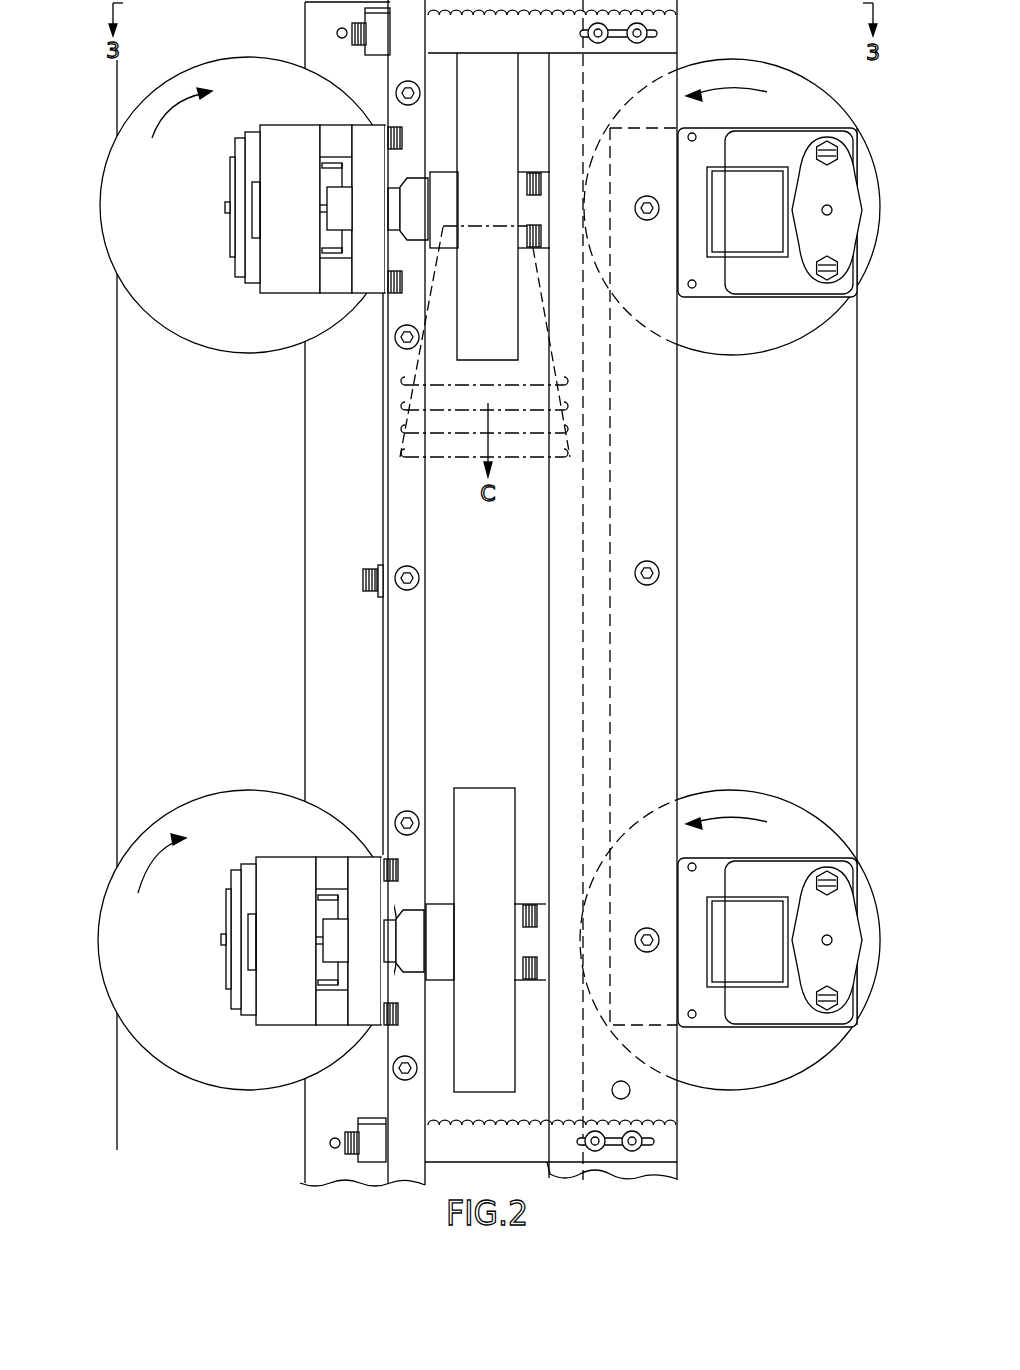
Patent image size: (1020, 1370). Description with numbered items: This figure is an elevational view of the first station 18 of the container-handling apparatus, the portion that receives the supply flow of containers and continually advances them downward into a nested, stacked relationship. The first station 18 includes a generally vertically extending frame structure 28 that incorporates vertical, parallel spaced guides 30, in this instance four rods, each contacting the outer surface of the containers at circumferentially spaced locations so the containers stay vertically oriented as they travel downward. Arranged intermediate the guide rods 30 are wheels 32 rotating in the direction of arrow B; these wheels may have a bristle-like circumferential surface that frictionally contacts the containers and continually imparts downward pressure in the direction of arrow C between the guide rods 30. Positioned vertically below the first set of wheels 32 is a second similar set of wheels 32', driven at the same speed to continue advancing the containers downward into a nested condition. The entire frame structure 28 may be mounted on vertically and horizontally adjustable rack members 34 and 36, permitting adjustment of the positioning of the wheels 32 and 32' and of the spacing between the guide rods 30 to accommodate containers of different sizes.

The first station 18 is at (810, 556).
The frame structure 28 is at (677, 517).
The guides 30 is at (426, 551).
The wheels 32 is at (490, 229).
The second set of wheels 32' is at (489, 937).
The rack member 34 is at (657, 2).
The rack member 36 is at (662, 667).